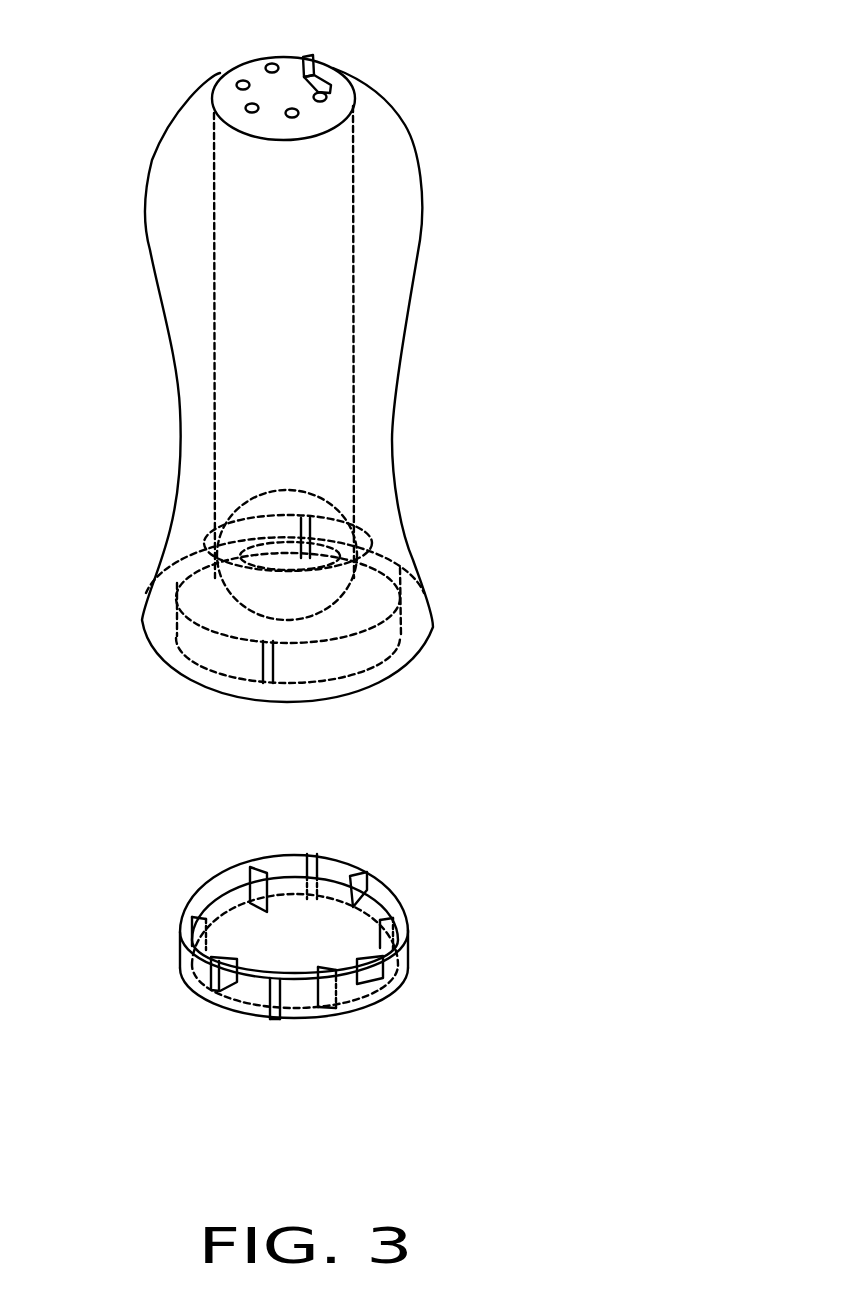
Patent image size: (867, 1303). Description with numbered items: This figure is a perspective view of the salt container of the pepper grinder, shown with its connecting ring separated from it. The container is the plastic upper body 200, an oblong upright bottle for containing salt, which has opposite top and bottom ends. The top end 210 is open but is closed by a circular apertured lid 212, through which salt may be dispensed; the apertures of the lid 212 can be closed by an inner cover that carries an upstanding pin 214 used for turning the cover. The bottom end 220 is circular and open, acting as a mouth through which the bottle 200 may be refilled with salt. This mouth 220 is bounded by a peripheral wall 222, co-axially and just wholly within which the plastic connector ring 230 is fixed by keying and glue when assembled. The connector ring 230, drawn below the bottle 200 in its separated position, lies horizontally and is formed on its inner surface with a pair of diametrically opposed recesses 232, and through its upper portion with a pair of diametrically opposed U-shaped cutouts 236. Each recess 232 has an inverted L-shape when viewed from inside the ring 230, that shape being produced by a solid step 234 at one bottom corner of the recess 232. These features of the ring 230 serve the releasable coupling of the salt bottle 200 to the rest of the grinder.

The upper body 200 is at (575, 303).
The top end 210 is at (362, 103).
The apertured lid 212 is at (233, 78).
The upstanding pin 214 is at (310, 53).
The bottom end 220 is at (391, 649).
The peripheral wall 222 is at (419, 609).
The connector ring 230 is at (540, 902).
The recess 232 is at (223, 883).
The solid step 234 is at (200, 926).
The U-shaped cutout 236 is at (375, 869).